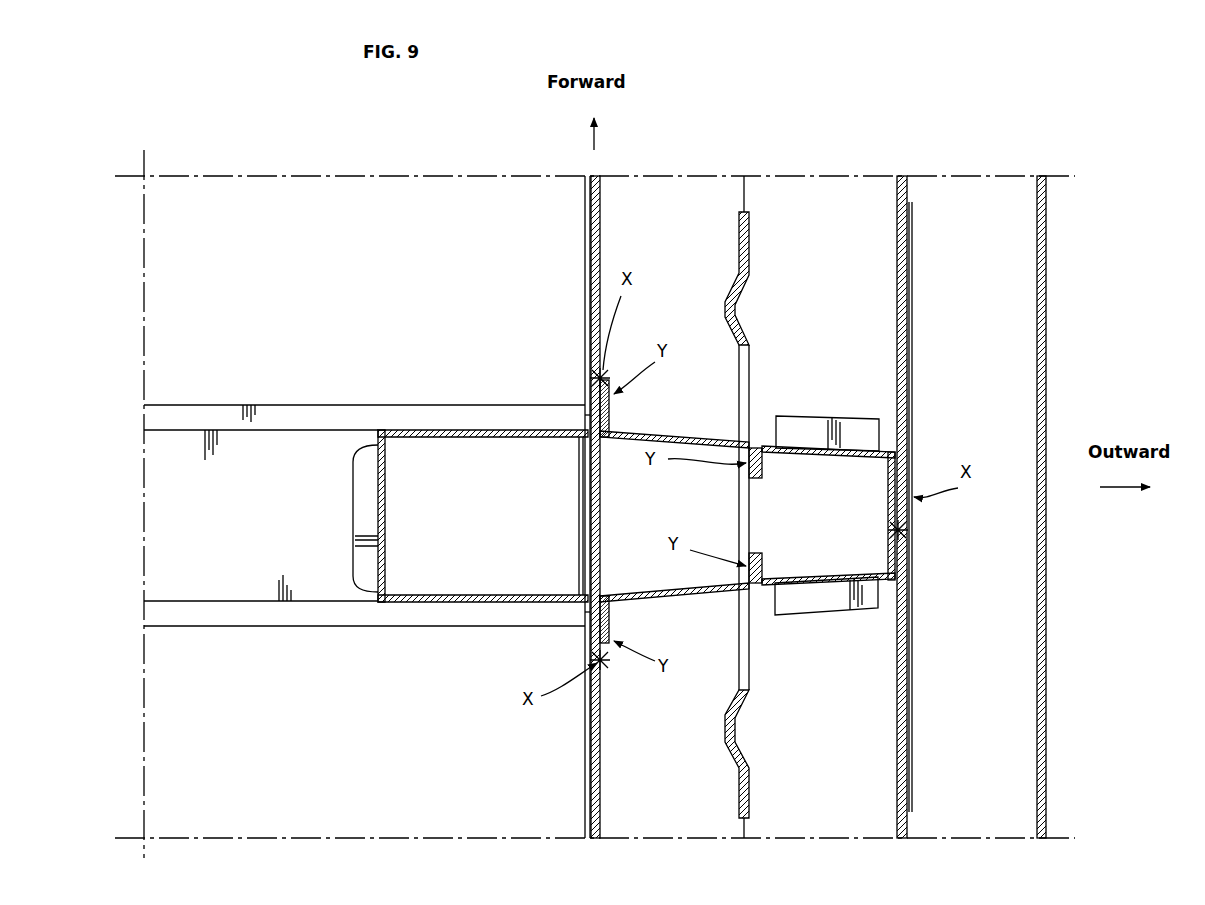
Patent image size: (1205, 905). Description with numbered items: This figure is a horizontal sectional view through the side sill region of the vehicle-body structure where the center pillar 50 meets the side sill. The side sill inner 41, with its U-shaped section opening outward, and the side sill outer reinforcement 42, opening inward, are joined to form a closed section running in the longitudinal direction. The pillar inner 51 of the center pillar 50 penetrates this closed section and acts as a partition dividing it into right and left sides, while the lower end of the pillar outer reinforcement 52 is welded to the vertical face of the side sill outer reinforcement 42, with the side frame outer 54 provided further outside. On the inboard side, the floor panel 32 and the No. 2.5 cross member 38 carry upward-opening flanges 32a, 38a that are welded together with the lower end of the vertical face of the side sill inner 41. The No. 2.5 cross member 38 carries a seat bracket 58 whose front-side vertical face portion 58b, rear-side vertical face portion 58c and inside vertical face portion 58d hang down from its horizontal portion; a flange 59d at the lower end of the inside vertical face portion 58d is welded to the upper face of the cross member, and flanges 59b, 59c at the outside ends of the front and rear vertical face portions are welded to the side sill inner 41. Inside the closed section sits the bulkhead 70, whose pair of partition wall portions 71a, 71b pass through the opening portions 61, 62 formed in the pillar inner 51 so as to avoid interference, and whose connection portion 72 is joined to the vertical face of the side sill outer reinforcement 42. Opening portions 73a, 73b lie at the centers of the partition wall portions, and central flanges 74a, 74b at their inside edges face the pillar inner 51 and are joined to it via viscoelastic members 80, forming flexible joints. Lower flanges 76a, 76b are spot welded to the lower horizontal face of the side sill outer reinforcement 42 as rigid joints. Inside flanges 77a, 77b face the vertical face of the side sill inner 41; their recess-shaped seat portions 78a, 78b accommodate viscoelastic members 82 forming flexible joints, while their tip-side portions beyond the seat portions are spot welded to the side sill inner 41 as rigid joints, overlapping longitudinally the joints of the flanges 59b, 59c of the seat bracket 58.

The floor panel 32 is at (276, 197).
The flange 32a is at (590, 285).
The No. 2.5 cross member 38 is at (170, 517).
The flange 38a is at (578, 542).
The side sill inner 41 is at (585, 228).
The side sill outer reinforcement 42 is at (905, 190).
The center pillar 50 is at (915, 268).
The pillar inner 51 is at (747, 507).
The pillar outer reinforcement 52 is at (910, 531).
The side frame outer 54 is at (1046, 212).
The seat bracket 58 is at (428, 509).
The front-side vertical face portion 58b is at (470, 430).
The rear-side vertical face portion 58c is at (478, 602).
The inside vertical face portion 58d is at (386, 522).
The flange 59b is at (588, 416).
The flange 59c is at (588, 612).
The flange 59d is at (352, 503).
The opening portion 61 is at (738, 378).
The opening portion 62 is at (738, 690).
The bulkhead 70 is at (827, 511).
The partition wall portion 71a is at (674, 414).
The partition wall portion 71b is at (674, 619).
The connection portion 72 is at (888, 505).
The opening portion 73a is at (782, 458).
The opening portion 73b is at (790, 573).
The central flange 74a is at (764, 445).
The central flange 74b is at (765, 590).
The lower flange 76a is at (862, 428).
The lower flange 76b is at (860, 612).
The inside flange 77a is at (612, 372).
The inside flange 77b is at (605, 668).
The seat portion 78a is at (612, 412).
The seat portion 78b is at (612, 607).
The viscoelastic member 80 is at (742, 475).
The viscoelastic member 82 is at (585, 437).